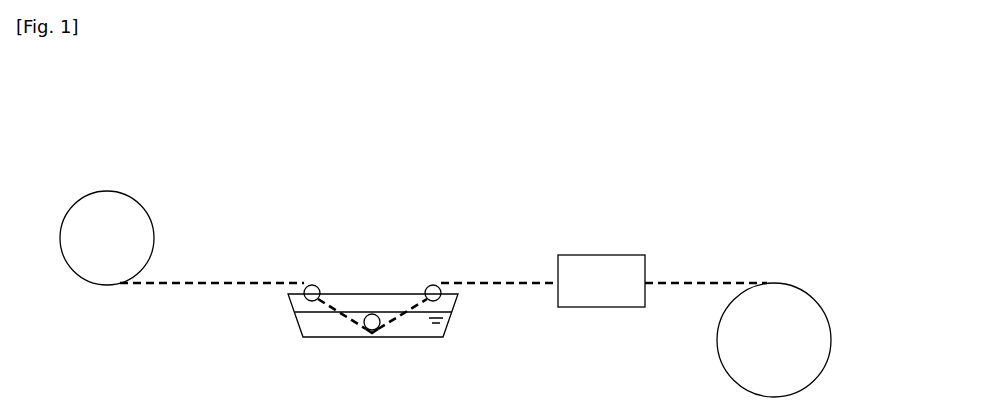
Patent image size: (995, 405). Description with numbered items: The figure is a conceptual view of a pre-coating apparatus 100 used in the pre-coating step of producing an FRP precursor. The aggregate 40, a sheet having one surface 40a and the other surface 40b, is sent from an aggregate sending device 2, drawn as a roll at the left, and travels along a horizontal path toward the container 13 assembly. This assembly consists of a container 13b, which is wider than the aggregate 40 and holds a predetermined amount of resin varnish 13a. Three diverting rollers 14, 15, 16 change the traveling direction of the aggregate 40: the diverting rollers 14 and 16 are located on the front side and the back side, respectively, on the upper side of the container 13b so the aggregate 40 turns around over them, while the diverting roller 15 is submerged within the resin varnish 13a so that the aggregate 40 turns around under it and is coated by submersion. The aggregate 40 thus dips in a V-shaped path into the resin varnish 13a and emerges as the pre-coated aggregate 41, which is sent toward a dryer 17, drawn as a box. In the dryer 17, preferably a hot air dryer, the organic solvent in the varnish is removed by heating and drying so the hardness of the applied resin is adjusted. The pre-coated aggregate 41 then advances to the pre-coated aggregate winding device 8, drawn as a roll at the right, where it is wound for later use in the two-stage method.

The pre-coating apparatus 100 is at (812, 130).
The aggregate sending device 2 is at (93, 196).
The aggregate 40 is at (184, 283).
The one surface of aggregate 40a is at (228, 283).
The other surface of aggregate 40b is at (222, 286).
The container with resin varnish 13 is at (419, 332).
The resin varnish 13a is at (447, 326).
The container 13b is at (440, 338).
The diverting roller 14 is at (311, 285).
The diverting roller 15 is at (373, 314).
The diverting roller 16 is at (436, 285).
The dryer 17 is at (600, 255).
The pre-coated aggregate 41 is at (697, 281).
The pre-coated aggregate winding device 8 is at (804, 291).